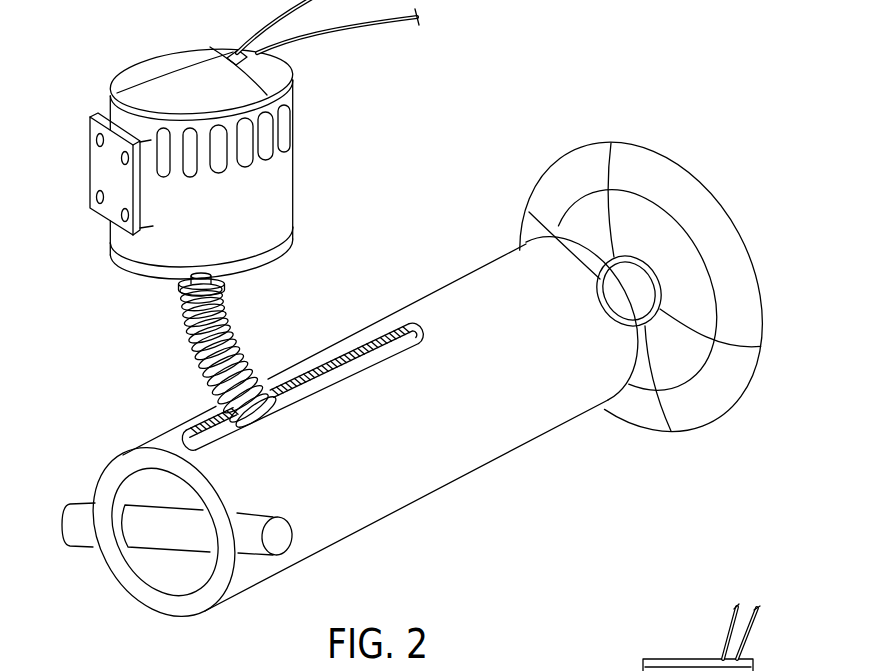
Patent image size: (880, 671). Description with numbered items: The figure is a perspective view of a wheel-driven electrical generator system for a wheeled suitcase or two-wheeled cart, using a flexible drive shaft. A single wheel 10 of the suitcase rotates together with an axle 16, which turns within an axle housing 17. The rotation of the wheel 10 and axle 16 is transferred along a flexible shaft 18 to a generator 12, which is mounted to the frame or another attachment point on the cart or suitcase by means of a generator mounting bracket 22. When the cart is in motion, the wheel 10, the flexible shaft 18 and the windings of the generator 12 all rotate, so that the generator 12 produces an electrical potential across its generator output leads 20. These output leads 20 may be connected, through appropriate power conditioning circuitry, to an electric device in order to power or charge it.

The wheel 10 is at (637, 143).
The generator 12 is at (262, 193).
The axle 16 is at (637, 307).
The axle housing 17 is at (470, 457).
The flexible shaft 18 is at (183, 327).
The generator output leads 20 is at (349, 31).
The generator mounting bracket 22 is at (100, 172).